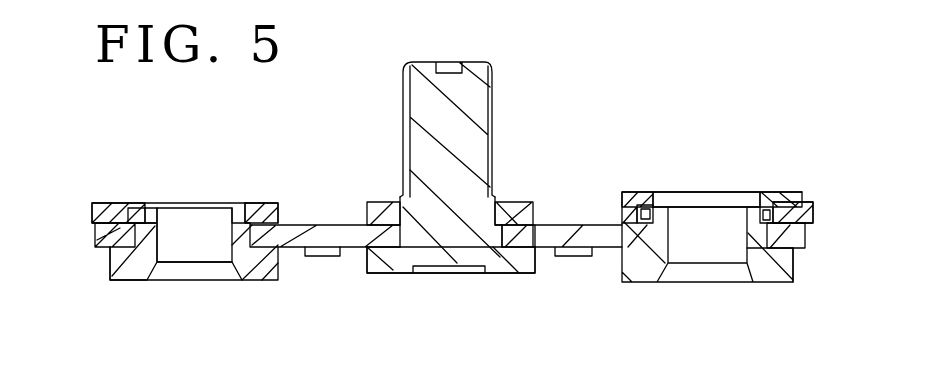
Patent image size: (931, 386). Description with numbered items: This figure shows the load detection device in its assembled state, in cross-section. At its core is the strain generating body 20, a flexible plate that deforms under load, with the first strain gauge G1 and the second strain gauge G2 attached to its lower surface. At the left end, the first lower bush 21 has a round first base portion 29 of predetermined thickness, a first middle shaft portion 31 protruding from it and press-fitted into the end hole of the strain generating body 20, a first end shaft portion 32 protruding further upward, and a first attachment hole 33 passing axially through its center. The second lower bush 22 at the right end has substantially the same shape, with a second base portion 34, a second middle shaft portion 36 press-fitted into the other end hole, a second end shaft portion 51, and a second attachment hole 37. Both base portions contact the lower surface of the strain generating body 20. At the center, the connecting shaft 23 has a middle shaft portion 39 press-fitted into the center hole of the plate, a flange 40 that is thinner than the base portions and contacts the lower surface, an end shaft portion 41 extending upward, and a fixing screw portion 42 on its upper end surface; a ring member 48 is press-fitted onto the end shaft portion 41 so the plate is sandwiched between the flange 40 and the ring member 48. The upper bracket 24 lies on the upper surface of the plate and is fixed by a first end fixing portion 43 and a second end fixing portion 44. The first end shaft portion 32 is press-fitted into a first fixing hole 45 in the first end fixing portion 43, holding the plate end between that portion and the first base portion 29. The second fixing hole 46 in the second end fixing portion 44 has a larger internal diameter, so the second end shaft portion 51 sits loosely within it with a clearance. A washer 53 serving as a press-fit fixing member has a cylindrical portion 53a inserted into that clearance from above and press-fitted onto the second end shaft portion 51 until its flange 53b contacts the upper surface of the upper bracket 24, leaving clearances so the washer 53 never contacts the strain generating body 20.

The strain generating body 20 is at (337, 232).
The first lower bush 21 is at (127, 285).
The second lower bush 22 is at (770, 290).
The connecting shaft 23 is at (393, 280).
The upper bracket 24 is at (266, 198).
The first base portion 29 is at (113, 272).
The first middle shaft portion 31 is at (130, 237).
The first end shaft portion 32 is at (133, 215).
The first attachment hole 33 is at (158, 237).
The second base portion 34 is at (785, 263).
The second middle shaft portion 36 is at (777, 235).
The second attachment hole 37 is at (743, 218).
The middle shaft portion 39 is at (513, 238).
The flange 40 is at (497, 263).
The end shaft portion 41 is at (507, 213).
The fixing screw portion 42 is at (477, 98).
The first end fixing portion 43 is at (92, 218).
The second end fixing portion 44 is at (815, 202).
The first fixing hole 45 is at (243, 220).
The second fixing hole 46 is at (643, 210).
The ring member 48 is at (383, 210).
The second end shaft portion 51 is at (810, 208).
The washer 53 is at (767, 186).
The cylindrical portion 53a is at (658, 210).
The flange 53b is at (783, 195).
The first strain gauge G1 is at (320, 257).
The second strain gauge G2 is at (572, 257).